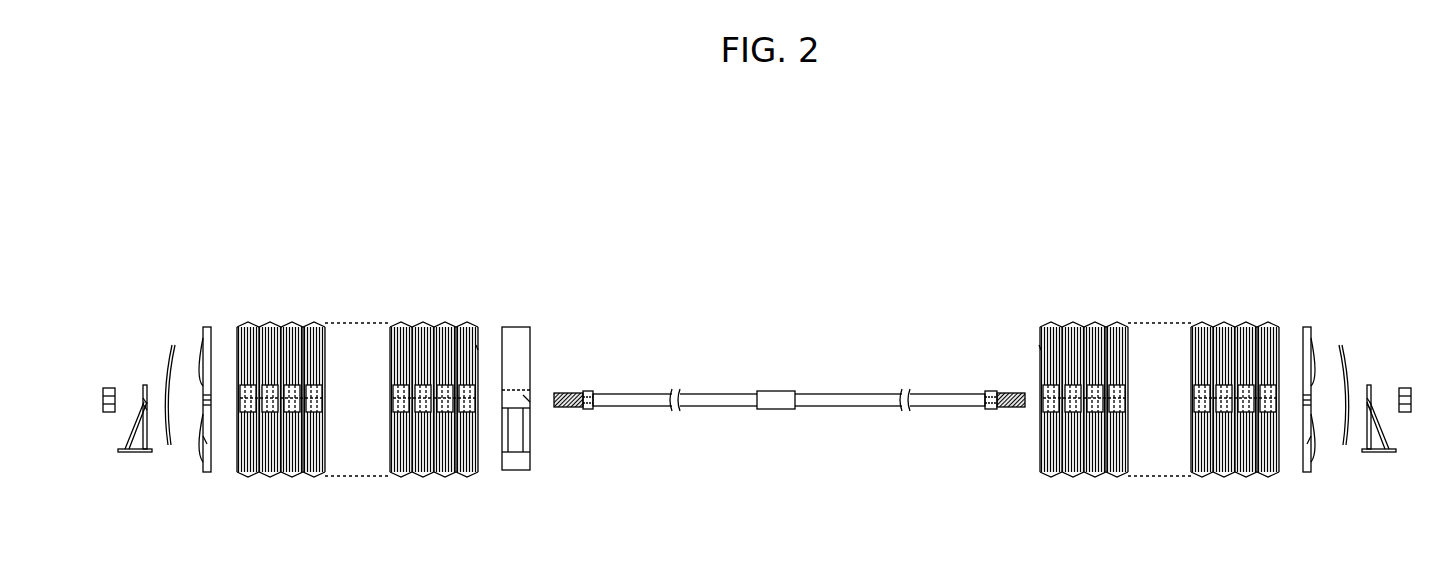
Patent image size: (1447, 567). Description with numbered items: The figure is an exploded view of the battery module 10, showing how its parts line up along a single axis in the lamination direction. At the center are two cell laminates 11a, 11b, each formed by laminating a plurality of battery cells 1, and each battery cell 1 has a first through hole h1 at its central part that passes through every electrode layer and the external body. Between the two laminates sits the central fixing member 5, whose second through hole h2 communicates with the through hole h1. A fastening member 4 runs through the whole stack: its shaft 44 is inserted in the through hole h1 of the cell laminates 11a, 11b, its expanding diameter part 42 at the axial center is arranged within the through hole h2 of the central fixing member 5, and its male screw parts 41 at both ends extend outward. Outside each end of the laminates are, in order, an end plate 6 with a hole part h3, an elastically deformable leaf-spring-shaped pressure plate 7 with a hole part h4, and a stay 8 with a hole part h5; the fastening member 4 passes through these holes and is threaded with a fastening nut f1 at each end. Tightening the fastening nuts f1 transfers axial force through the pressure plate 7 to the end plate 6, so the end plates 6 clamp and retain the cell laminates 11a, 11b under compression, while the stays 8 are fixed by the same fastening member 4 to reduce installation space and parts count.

The battery module 10 is at (893, 172).
The battery cell 1 is at (434, 303).
The cell laminate 11a is at (237, 487).
The cell laminate 11b is at (1040, 487).
The first through hole h1 is at (477, 346).
The second through hole h2 is at (528, 400).
The hole part h3 is at (203, 440).
The hole part h4 is at (143, 402).
The hole part h5 is at (142, 405).
The central fixing member 5 is at (515, 471).
The fastening member 4 is at (711, 378).
The male screw part 41 is at (567, 392).
The expanding diameter part 42 is at (776, 391).
The shaft 44 is at (841, 393).
The end plate 6 is at (206, 326).
The pressure plate 7 is at (170, 345).
The stay 8 is at (127, 454).
The fastening nut f1 is at (107, 388).